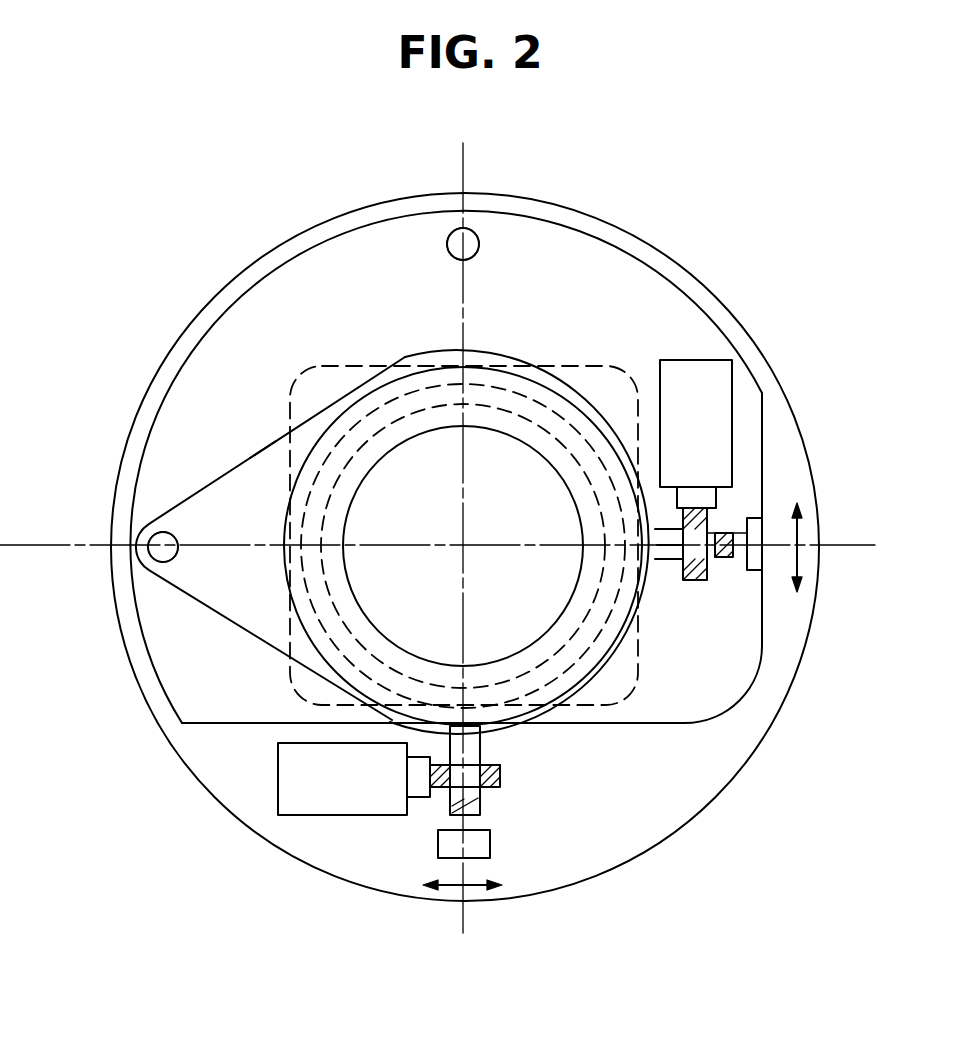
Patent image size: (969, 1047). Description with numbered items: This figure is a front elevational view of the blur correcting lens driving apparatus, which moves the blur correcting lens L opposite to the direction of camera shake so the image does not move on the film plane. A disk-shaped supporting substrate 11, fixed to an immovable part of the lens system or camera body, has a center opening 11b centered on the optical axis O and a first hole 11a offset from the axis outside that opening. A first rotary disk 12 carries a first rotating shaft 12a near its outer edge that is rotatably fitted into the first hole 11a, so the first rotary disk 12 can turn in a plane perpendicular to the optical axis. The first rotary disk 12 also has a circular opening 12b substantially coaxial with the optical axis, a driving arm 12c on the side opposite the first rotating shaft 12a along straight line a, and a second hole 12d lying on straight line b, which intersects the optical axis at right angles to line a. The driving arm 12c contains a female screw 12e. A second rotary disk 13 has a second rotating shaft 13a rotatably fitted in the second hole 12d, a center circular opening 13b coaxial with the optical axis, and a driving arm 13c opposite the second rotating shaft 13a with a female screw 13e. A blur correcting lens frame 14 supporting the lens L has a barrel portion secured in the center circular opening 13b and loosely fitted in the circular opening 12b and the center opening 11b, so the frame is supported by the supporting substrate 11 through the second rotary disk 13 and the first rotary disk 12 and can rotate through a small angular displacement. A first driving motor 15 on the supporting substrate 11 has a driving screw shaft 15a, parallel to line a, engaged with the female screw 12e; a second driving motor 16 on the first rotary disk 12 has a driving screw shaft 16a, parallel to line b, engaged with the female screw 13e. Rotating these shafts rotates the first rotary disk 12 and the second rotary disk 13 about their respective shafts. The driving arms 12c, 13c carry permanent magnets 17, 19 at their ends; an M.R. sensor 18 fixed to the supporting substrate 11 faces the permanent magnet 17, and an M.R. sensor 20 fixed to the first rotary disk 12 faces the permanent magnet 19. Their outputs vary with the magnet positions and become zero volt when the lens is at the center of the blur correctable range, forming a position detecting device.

The supporting substrate 11 is at (778, 437).
The first hole 11a is at (463, 244).
The center opening 11b is at (300, 372).
The first rotary disk 12 is at (697, 702).
The first rotating shaft 12a is at (480, 236).
The circular opening 12b is at (390, 405).
The driving arm 12c is at (480, 793).
The second hole 12d is at (163, 547).
The female screw 12e is at (497, 762).
The second rotary disk 13 is at (205, 493).
The second rotating shaft 13a is at (150, 558).
The center circular opening 13b is at (263, 450).
The driving arm 13c is at (712, 562).
The female screw 13e is at (674, 562).
The blur correcting lens frame 14 is at (525, 412).
The first driving motor 15 is at (353, 800).
The driving screw shaft 15a is at (498, 774).
The second driving motor 16 is at (715, 378).
The driving screw shaft 16a is at (709, 560).
The permanent magnet 17 is at (450, 810).
The M.R. sensor 18 is at (489, 880).
The permanent magnet 19 is at (755, 520).
The M.R. sensor 20 is at (762, 533).